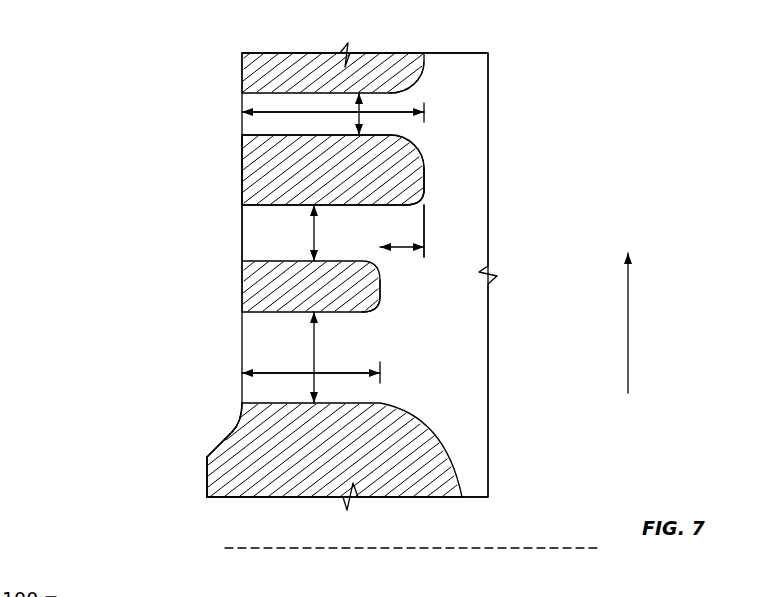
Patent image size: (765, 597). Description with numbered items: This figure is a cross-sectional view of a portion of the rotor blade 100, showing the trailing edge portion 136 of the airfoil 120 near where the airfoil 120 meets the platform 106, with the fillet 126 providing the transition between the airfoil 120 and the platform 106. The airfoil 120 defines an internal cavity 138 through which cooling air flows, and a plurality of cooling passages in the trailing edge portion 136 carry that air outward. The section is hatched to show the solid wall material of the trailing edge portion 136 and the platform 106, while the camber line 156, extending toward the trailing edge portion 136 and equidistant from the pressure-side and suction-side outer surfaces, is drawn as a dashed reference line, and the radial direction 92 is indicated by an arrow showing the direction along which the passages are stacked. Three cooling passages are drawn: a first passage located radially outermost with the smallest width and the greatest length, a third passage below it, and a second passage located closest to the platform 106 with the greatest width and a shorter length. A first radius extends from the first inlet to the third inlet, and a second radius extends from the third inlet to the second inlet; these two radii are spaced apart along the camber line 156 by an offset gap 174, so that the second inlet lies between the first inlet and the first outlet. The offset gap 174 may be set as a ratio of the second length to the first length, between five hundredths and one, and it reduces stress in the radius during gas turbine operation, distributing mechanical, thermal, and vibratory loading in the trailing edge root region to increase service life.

The rotor blade 100 is at (107, 62).
The airfoil 120 is at (276, 13).
The platform 106 is at (207, 480).
The fillet 126 is at (232, 441).
The trailing edge portion 136 is at (242, 153).
The internal cavity 138 is at (447, 270).
The camber line 156 is at (317, 548).
The axial direction 92 is at (628, 330).
The offset gap 174 is at (403, 247).